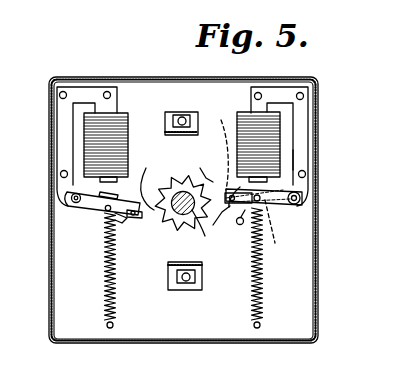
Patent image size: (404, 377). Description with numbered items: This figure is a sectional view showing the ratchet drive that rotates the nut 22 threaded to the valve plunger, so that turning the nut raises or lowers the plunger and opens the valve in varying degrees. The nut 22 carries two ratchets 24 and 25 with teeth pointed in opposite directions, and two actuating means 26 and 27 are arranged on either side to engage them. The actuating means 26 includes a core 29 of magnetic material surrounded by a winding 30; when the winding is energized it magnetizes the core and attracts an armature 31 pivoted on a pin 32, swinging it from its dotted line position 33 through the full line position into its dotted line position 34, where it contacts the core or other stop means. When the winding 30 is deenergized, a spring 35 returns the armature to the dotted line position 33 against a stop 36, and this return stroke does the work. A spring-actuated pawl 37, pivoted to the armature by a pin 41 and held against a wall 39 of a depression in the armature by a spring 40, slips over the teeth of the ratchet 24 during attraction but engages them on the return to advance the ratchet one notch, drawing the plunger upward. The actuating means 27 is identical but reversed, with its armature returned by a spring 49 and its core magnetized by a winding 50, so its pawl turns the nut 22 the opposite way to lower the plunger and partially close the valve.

The nut 22 is at (170, 228).
The ratchet 24 is at (181, 175).
The ratchet 25 is at (145, 220).
The actuating means 26 is at (297, 133).
The actuating means 27 is at (65, 154).
The core 29 is at (302, 155).
The winding 30 is at (240, 137).
The armature 31 is at (278, 205).
The pin 32 is at (301, 201).
The dotted line position 33 is at (280, 231).
The dotted line position 34 is at (215, 155).
The spring 35 is at (252, 292).
The stop 36 is at (239, 225).
The pawl 37 is at (178, 232).
The wall 39 is at (180, 179).
The spring 40 is at (214, 228).
The pin 41 is at (240, 187).
The spring 49 is at (108, 282).
The winding 50 is at (118, 132).